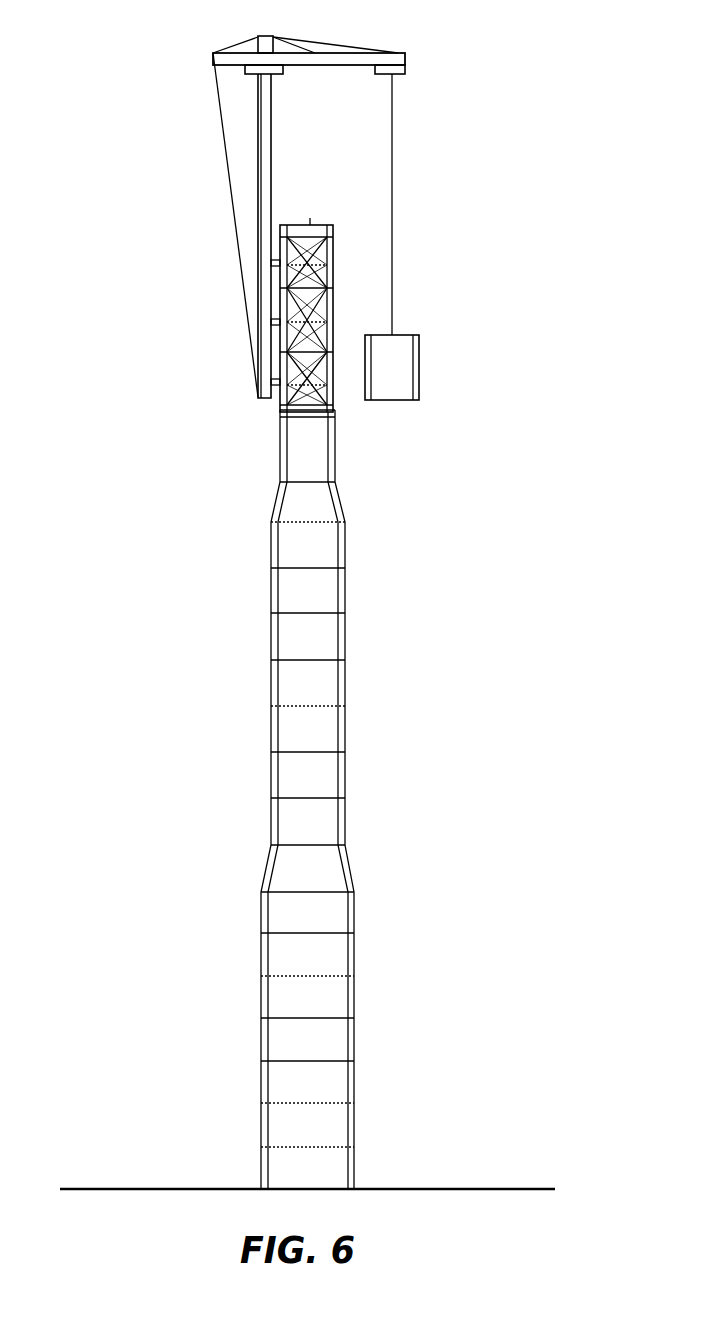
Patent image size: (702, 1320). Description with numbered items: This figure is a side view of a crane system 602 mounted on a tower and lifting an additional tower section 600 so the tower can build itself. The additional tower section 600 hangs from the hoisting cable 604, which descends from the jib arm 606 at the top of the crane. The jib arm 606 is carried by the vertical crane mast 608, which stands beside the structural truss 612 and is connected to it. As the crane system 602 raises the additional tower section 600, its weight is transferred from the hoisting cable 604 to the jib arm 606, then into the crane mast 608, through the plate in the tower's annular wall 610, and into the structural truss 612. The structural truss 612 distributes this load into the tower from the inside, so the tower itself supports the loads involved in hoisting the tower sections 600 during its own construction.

The additional tower section 600 is at (443, 370).
The crane system 602 is at (208, 178).
The hoisting cable 604 is at (393, 188).
The jib arm 606 is at (394, 53).
The crane mast 608 is at (258, 102).
The tower annular wall 610 is at (346, 681).
The structural truss 612 is at (300, 222).